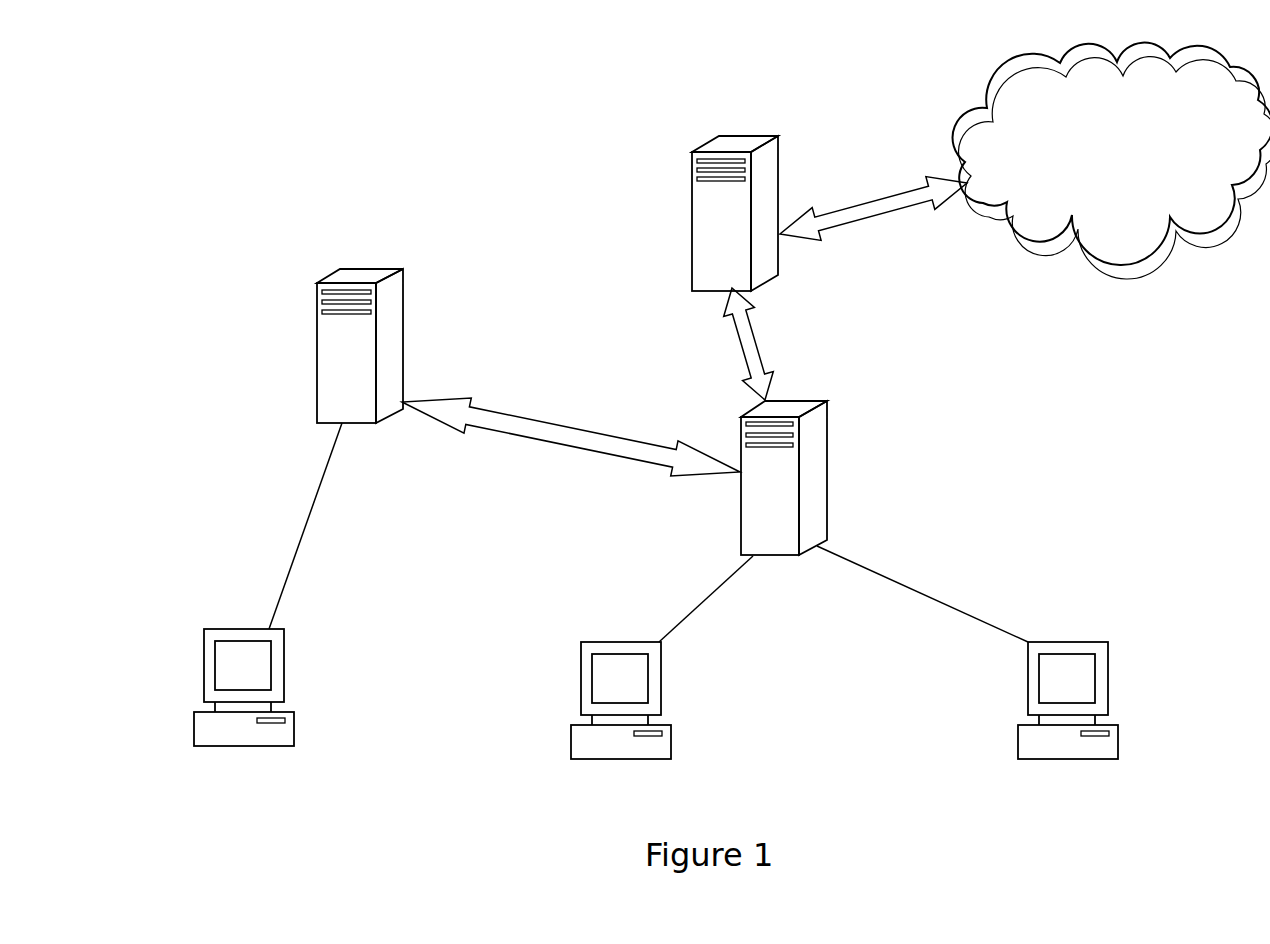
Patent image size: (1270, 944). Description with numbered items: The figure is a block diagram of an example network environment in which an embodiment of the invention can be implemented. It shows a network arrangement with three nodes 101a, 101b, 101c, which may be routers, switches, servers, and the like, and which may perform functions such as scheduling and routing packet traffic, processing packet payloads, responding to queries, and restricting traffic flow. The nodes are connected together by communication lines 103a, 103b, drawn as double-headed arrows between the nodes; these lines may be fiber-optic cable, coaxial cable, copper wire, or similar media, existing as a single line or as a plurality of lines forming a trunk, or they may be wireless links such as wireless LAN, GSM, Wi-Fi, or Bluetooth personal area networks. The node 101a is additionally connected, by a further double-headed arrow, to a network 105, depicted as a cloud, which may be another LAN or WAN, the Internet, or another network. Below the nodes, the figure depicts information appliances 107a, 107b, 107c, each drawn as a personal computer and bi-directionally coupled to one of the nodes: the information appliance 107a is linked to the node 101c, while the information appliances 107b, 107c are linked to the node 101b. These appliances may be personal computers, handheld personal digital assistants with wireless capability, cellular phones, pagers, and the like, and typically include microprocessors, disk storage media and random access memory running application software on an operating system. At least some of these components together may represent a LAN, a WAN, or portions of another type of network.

The node 101a is at (735, 194).
The node 101b is at (790, 460).
The node 101c is at (360, 323).
The communication line 103a is at (722, 344).
The communication line 103b is at (571, 432).
The network 105 is at (1111, 161).
The information appliance 107a is at (278, 687).
The information appliance 107b is at (656, 700).
The information appliance 107c is at (1096, 700).